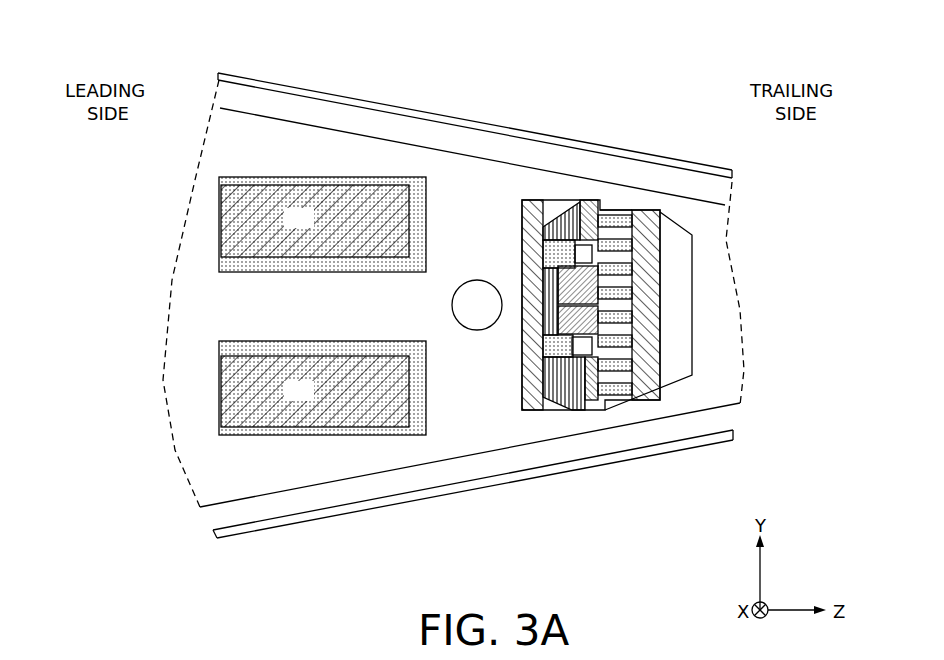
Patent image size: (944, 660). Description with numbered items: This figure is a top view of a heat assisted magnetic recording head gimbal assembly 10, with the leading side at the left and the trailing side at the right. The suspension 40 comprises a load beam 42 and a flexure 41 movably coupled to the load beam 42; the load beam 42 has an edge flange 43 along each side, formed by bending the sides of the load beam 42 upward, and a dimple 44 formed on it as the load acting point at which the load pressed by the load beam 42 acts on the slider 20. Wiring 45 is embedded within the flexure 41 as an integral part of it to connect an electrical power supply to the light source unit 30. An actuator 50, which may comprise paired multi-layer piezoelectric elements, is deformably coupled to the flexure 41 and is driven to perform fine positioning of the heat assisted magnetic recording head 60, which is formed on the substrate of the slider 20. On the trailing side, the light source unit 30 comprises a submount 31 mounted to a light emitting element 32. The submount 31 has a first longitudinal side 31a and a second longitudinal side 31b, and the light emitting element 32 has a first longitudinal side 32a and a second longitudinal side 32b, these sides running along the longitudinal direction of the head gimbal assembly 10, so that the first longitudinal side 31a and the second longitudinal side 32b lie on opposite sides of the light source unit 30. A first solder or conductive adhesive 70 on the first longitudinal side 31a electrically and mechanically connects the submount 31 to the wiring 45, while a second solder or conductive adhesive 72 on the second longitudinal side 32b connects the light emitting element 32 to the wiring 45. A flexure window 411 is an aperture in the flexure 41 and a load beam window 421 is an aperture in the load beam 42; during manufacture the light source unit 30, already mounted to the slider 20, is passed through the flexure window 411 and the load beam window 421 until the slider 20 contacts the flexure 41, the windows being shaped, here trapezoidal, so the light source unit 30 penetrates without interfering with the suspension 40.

The heat assisted magnetic recording head gimbal assembly 10 is at (258, 28).
The slider 20 is at (575, 356).
The light source unit 30 is at (582, 313).
The submount 31 is at (678, 272).
The first longitudinal side of the submount 31a is at (598, 278).
The second longitudinal side of the submount 31b is at (553, 207).
The light emitting element 32 is at (612, 318).
The first longitudinal side of the light emitting element 32a is at (532, 387).
The second longitudinal side of the light emitting element 32b is at (563, 325).
The suspension 40 is at (286, 320).
The flexure 41 is at (523, 410).
The flexure window 411 is at (610, 210).
The load beam 42 is at (484, 208).
The load beam window 421 is at (697, 331).
The edge flange 43 is at (314, 120).
The dimple 44 is at (489, 315).
The wiring 45 is at (297, 182).
The actuator 50 is at (311, 228).
The heat assisted magnetic recording head 60 is at (588, 222).
The first solder or conductive adhesive 70 is at (583, 246).
The second solder or conductive adhesive 72 is at (582, 318).